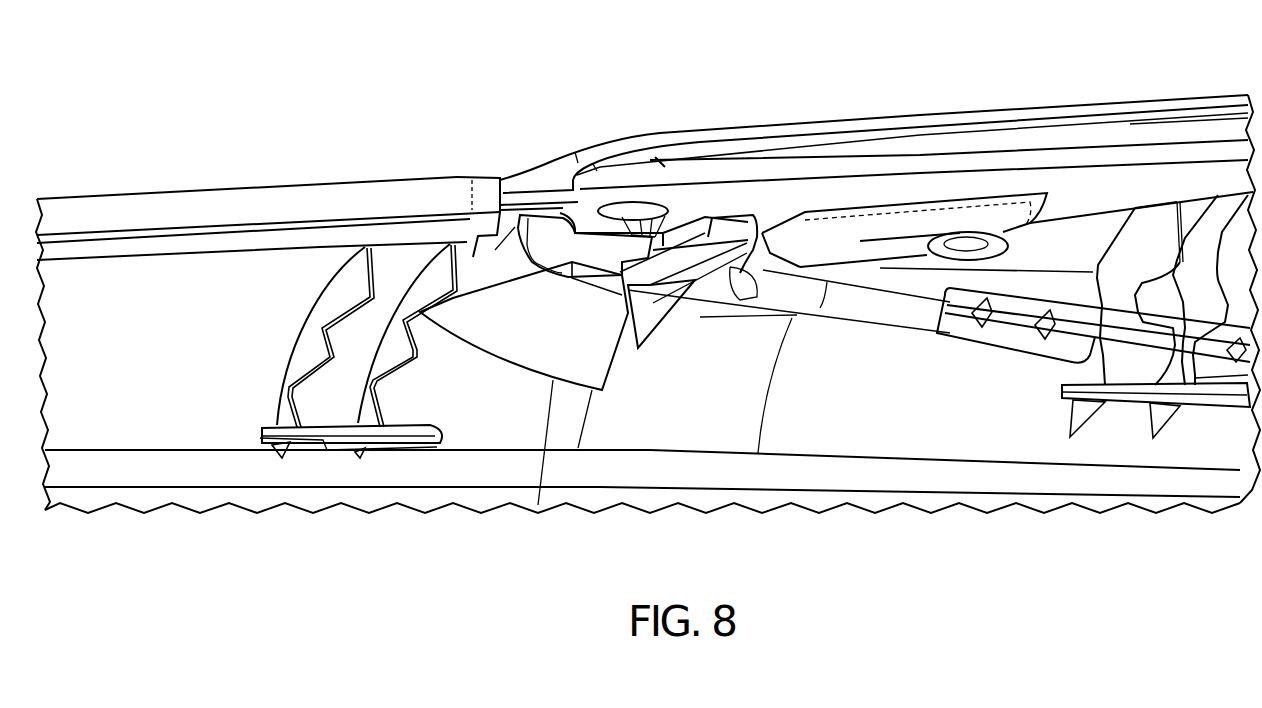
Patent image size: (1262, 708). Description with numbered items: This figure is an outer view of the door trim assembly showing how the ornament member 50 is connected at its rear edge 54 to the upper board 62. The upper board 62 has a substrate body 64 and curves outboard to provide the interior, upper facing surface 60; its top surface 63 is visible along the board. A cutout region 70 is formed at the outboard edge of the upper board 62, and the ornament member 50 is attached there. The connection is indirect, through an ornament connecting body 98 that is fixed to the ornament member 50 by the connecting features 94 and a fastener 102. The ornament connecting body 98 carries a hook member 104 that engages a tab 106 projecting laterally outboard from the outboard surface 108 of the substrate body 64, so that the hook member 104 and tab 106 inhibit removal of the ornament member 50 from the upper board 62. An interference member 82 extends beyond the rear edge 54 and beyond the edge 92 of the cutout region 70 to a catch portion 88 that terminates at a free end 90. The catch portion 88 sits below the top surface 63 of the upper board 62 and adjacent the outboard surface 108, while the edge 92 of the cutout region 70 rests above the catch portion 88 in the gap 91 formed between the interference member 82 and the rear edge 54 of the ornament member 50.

The ornament member 50 is at (748, 93).
The rear edge 54 is at (555, 167).
The interior, upper facing surface 60 is at (180, 248).
The upper board 62 is at (195, 456).
The top surface 63 is at (236, 189).
The substrate body 64 is at (287, 488).
The cutout region 70 is at (494, 174).
The interference member 82 is at (548, 284).
The catch portion 88 is at (463, 247).
The free end 90 is at (480, 198).
The gap 91 is at (511, 227).
The edge 92 is at (500, 187).
The connecting features 94 is at (678, 208).
The ornament connecting body 98 is at (1155, 140).
The fastener 102 is at (950, 258).
The hook member 104 is at (713, 277).
The tab 106 is at (712, 224).
The outboard surface 108 is at (372, 351).